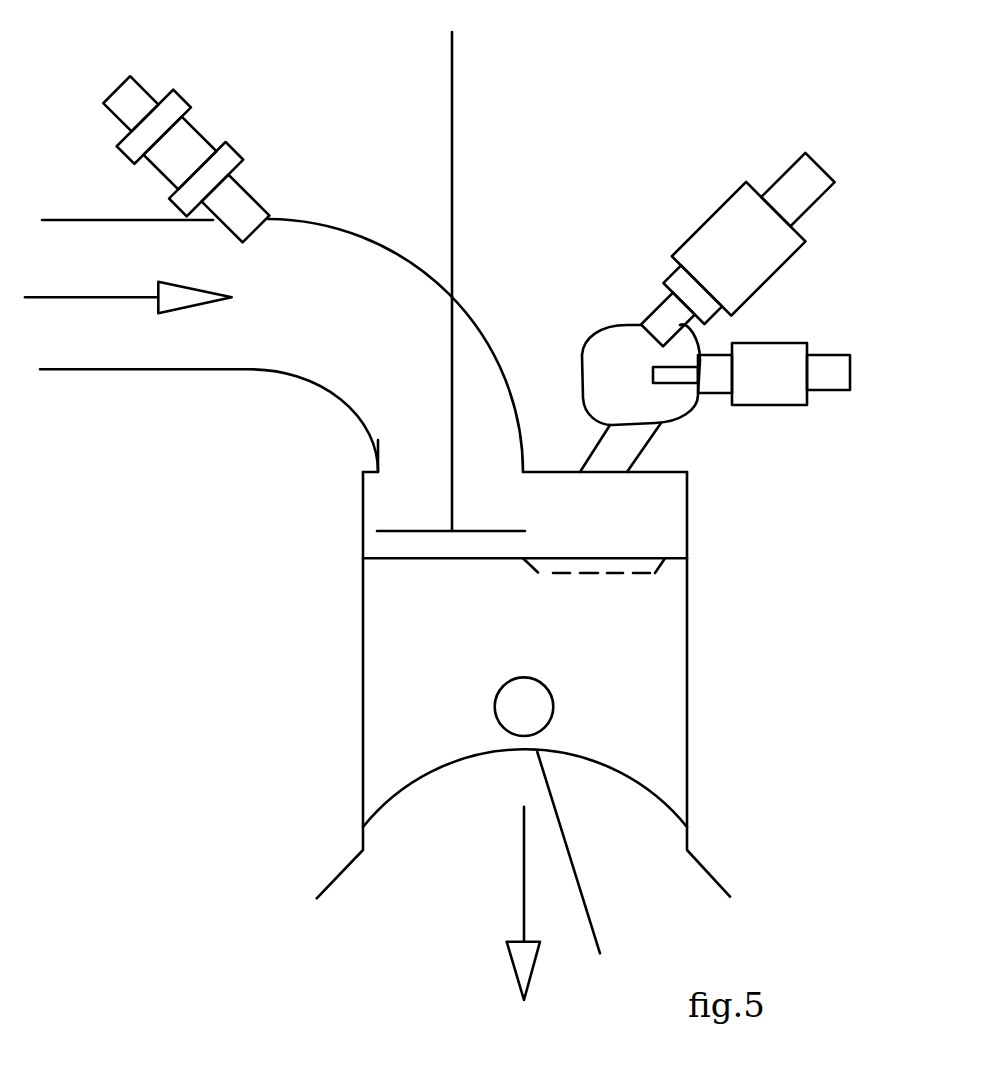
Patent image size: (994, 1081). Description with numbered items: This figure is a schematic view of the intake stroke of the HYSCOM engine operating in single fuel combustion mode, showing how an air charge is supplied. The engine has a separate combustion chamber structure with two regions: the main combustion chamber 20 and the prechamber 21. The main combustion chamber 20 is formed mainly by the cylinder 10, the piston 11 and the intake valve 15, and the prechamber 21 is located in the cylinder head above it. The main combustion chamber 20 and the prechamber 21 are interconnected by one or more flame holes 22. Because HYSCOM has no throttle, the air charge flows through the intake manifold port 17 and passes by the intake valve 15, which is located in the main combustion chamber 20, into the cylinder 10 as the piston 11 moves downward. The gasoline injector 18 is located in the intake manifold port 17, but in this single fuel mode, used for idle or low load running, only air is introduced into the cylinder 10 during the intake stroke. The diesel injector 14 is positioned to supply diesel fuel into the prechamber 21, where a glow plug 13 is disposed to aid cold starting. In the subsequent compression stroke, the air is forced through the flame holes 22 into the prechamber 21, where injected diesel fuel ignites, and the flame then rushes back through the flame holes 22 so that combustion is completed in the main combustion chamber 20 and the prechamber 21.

The cylinder 10 is at (687, 764).
The piston 11 is at (672, 710).
The glow plug 13 is at (775, 387).
The diesel injector 14 is at (733, 223).
The intake valve 15 is at (453, 135).
The intake manifold port 17 is at (349, 253).
The gasoline injector 18 is at (156, 108).
The main combustion chamber 20 is at (657, 521).
The prechamber 21 is at (675, 353).
The flame holes 22 is at (622, 458).